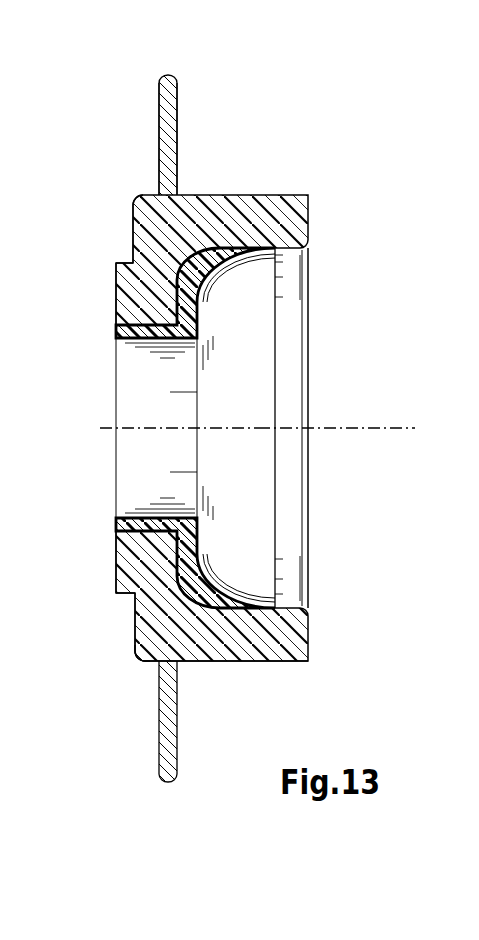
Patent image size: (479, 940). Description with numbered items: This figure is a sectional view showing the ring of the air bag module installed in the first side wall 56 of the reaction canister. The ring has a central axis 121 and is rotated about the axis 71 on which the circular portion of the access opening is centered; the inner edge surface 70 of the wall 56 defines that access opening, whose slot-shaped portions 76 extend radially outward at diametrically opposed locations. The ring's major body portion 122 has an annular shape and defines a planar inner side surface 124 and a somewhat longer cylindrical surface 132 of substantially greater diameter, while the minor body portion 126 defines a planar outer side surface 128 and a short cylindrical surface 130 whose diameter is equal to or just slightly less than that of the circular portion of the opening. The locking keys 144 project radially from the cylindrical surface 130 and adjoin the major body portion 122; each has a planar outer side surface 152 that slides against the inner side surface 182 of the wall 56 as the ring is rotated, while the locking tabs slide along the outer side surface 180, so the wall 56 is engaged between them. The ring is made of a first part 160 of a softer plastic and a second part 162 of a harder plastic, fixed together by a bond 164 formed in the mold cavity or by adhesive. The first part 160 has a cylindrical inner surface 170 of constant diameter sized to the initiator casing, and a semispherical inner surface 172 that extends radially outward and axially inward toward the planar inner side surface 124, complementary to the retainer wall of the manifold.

The first side wall 56 is at (168, 73).
The inner edge surface 70 is at (146, 650).
The axis 71 is at (100, 428).
The slot-shaped portions 76 is at (160, 631).
The central axis 121 is at (340, 427).
The major body portion 122 is at (258, 205).
The planar inner side surface 124 is at (310, 637).
The minor body portion 126 is at (130, 290).
The planar outer side surface 128 is at (116, 560).
The cylindrical surface 130 is at (130, 258).
The cylindrical surface 132 is at (228, 663).
The locking keys 144 is at (144, 194).
The planar outer side surface 152 is at (131, 223).
The first part 160 is at (277, 330).
The second part 162 is at (308, 215).
The bond 164 is at (153, 333).
The cylindrical inner surface 170 is at (155, 518).
The semispherical inner surface 172 is at (255, 518).
The outer side surface 180 is at (158, 105).
The inner side surface 182 is at (177, 107).